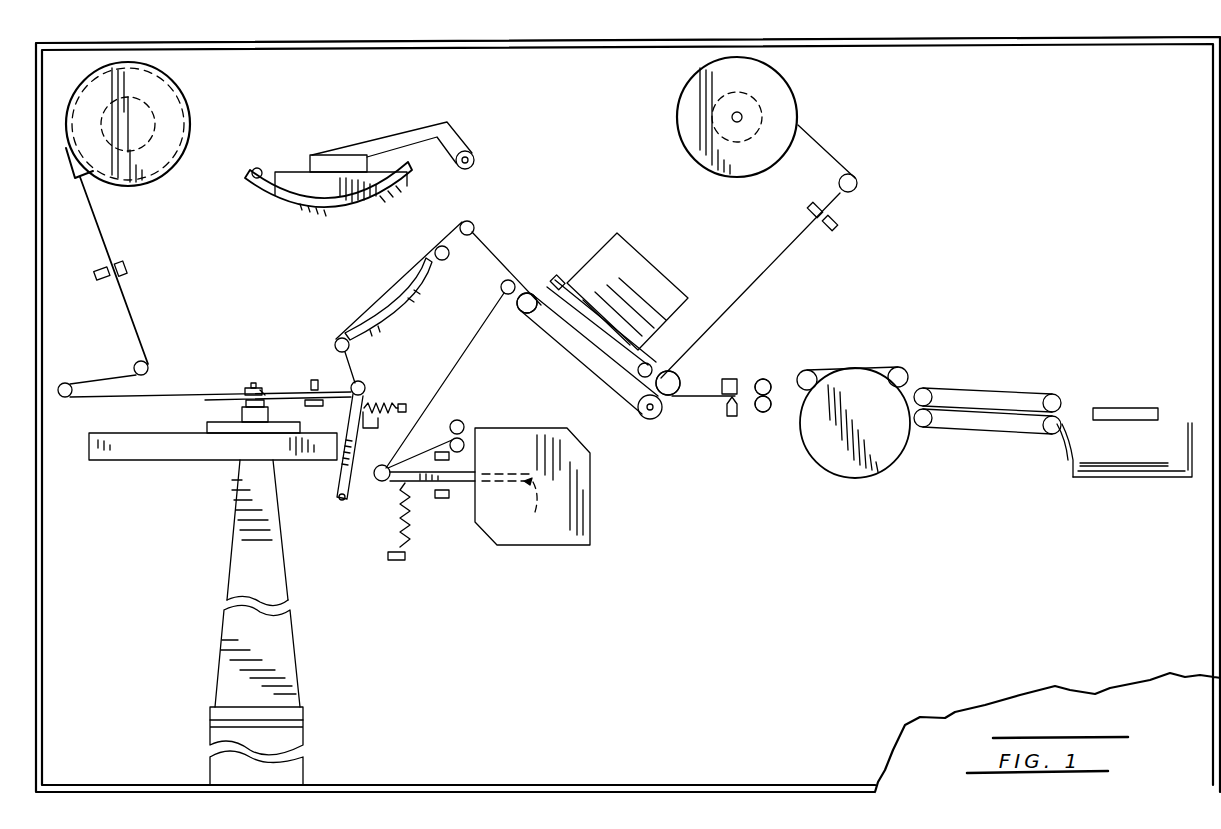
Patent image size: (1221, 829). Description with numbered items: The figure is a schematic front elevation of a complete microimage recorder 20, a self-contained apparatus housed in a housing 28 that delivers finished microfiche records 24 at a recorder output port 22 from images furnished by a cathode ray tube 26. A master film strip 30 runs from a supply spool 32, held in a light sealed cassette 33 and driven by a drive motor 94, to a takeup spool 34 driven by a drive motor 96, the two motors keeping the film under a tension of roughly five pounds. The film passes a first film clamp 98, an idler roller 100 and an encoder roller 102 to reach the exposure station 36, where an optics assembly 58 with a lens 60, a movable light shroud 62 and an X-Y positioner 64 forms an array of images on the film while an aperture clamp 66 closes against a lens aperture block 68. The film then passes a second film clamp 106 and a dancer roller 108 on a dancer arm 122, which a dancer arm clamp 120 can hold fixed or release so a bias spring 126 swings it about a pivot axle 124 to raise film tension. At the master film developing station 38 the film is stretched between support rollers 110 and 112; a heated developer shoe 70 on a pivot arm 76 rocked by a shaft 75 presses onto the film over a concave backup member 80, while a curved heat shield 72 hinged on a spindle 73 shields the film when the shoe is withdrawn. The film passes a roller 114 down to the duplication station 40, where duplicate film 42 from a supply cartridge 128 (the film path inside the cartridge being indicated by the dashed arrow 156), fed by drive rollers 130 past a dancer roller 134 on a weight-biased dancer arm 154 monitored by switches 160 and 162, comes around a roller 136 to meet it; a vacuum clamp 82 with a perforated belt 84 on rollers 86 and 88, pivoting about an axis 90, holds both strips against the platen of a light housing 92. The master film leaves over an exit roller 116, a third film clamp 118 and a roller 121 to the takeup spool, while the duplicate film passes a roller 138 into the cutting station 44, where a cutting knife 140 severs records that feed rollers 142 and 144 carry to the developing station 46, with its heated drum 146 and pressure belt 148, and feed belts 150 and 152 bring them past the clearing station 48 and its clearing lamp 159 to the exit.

The microimage recorder 20 is at (878, 28).
The recorder output port 22 is at (1192, 480).
The microfiche records 24 is at (1075, 472).
The cathode ray tube 26 is at (292, 730).
The housing 28 is at (648, 780).
The master film strip 30 is at (133, 290).
The supply spool 32 is at (175, 78).
The light sealed cassette 33 is at (118, 180).
The takeup spool 34 is at (797, 100).
The exposure station 36 is at (231, 322).
The master film developing station 38 is at (495, 190).
The duplication station 40 is at (582, 222).
The duplicate film 42 is at (455, 372).
The cutting station 44 is at (748, 348).
The duplicate film developing station 46 is at (898, 332).
The clearing station 48 is at (1112, 380).
The optics assembly 58 is at (212, 515).
The lens 60 is at (240, 415).
The light shroud 62 is at (232, 578).
The X-Y positioner 64 is at (170, 460).
The aperture clamp 66 is at (246, 392).
The lens aperture block 68 is at (265, 392).
The developer shoe 70 is at (300, 172).
The heat shield 72 is at (375, 212).
The spindle 73 is at (256, 168).
The shaft 75 is at (480, 148).
The pivot arm 76 is at (395, 140).
The backup member 80 is at (415, 295).
The vacuum clamp 82 is at (546, 312).
The perforated belt 84 is at (595, 368).
The roller 86 is at (515, 312).
The roller 88 is at (642, 415).
The axis 90 is at (662, 398).
The light housing 92 is at (650, 270).
The drive motor 94 is at (168, 163).
The drive motor 96 is at (712, 104).
The first film clamp 98 is at (96, 270).
The idler roller 100 is at (134, 366).
The encoder roller 102 is at (70, 398).
The second film clamp 106 is at (314, 380).
The dancer roller 108 is at (364, 385).
The support roller 110 is at (350, 346).
The support roller 112 is at (449, 255).
The roller 114 is at (474, 222).
The exit roller 116 is at (650, 362).
The third film clamp 118 is at (808, 208).
The dancer arm clamp 120 is at (372, 432).
The roller 121 is at (860, 180).
The dancer arm 122 is at (340, 486).
The pivot axle 124 is at (342, 505).
The bias spring 126 is at (380, 404).
The supply cartridge 128 is at (592, 520).
The duplicate film strip drive rollers 130 is at (462, 422).
The dancer roller 134 is at (392, 466).
The roller 136 is at (500, 288).
The roller 138 is at (680, 378).
The cutting knife 140 is at (732, 418).
The feed roller 142 is at (768, 380).
The feed roller 144 is at (764, 412).
The heated drum 146 is at (908, 445).
The pressure belt 148 is at (840, 370).
The feed belt 150 is at (982, 388).
The feed belt 152 is at (1000, 436).
The dancer arm 154 is at (465, 482).
The path arrow 156 is at (530, 510).
The clearing lamp 159 is at (1133, 406).
The switch 160 is at (449, 455).
The switch 162 is at (445, 498).